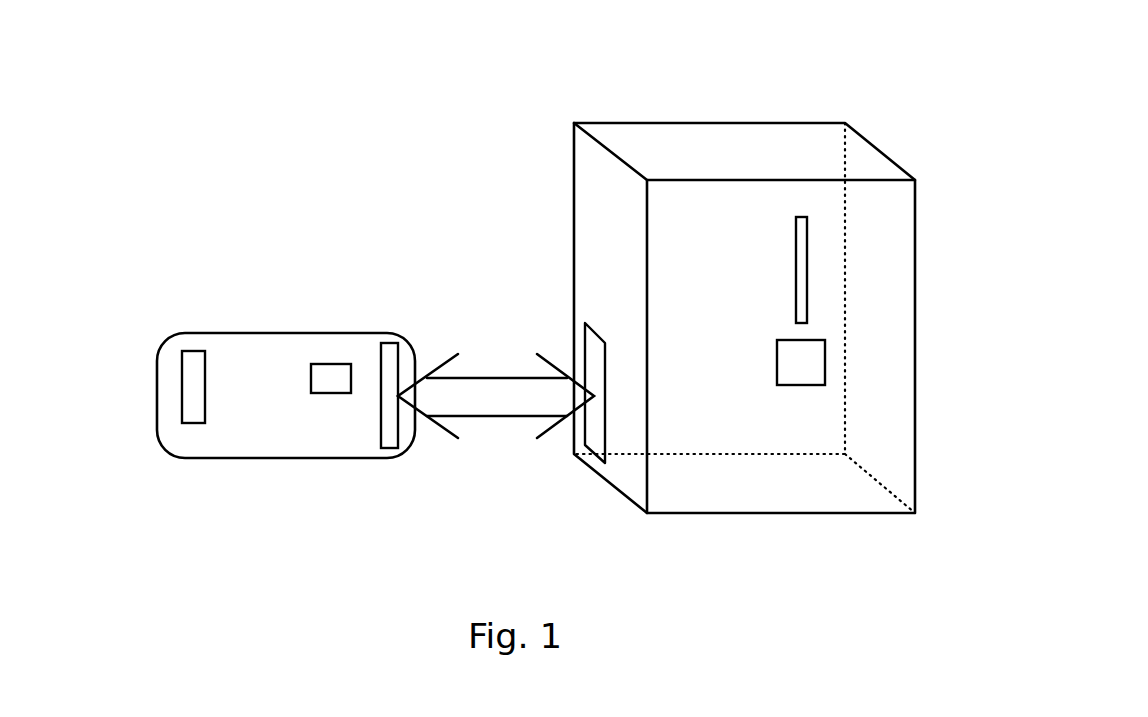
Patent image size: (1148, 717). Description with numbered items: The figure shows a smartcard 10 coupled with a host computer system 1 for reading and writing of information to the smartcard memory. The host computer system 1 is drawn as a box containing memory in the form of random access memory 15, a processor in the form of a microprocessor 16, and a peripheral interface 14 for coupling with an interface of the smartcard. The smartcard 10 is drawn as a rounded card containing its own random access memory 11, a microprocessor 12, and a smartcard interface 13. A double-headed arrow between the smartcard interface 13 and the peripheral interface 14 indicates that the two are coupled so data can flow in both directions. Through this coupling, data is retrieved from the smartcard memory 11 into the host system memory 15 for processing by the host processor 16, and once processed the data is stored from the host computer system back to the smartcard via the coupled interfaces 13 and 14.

The host computer system 1 is at (682, 142).
The smartcard 10 is at (223, 497).
The random access memory 11 is at (196, 372).
The microprocessor 12 is at (330, 373).
The smartcard interface 13 is at (362, 446).
The peripheral interface 14 is at (596, 442).
The random access memory 15 is at (793, 270).
The microprocessor 16 is at (795, 375).